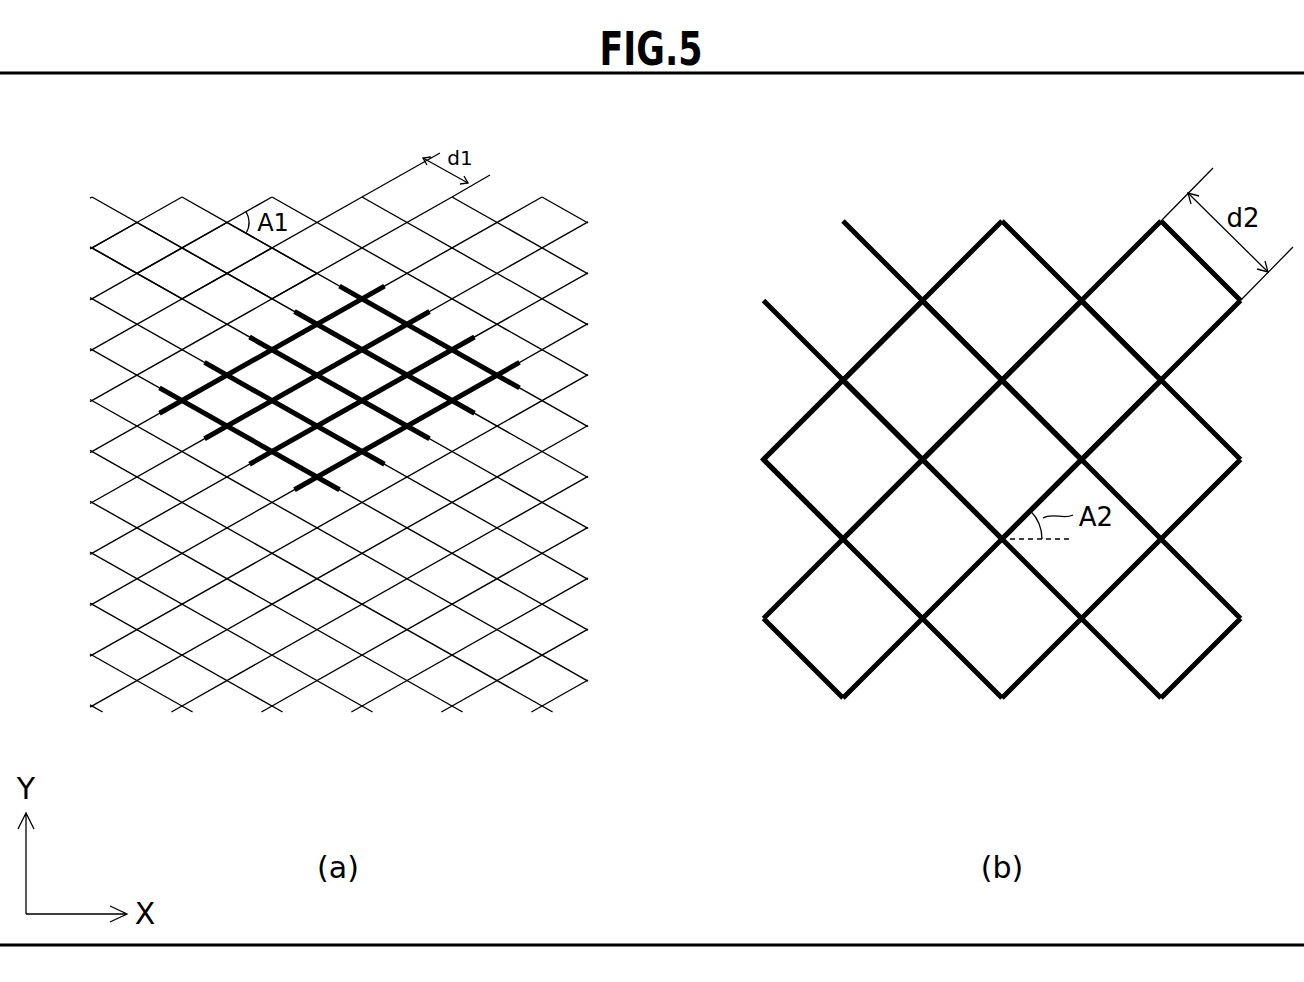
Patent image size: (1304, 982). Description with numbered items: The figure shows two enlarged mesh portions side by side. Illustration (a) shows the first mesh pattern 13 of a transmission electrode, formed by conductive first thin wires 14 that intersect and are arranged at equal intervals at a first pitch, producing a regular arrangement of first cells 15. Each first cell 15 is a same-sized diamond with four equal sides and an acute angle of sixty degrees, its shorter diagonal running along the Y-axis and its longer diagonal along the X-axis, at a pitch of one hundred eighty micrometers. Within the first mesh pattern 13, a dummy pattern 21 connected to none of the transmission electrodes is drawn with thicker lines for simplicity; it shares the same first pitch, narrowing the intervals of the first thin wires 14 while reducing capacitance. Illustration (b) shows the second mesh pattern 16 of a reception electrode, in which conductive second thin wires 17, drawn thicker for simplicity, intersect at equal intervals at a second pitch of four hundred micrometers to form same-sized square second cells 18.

The first mesh pattern 13 is at (510, 160).
The first thin wires 14 is at (115, 208).
The first cells 15 is at (284, 284).
The dummy pattern 21 is at (512, 383).
The second mesh pattern 16 is at (1165, 160).
The second thin wires 17 is at (888, 262).
The second cells 18 is at (1022, 476).